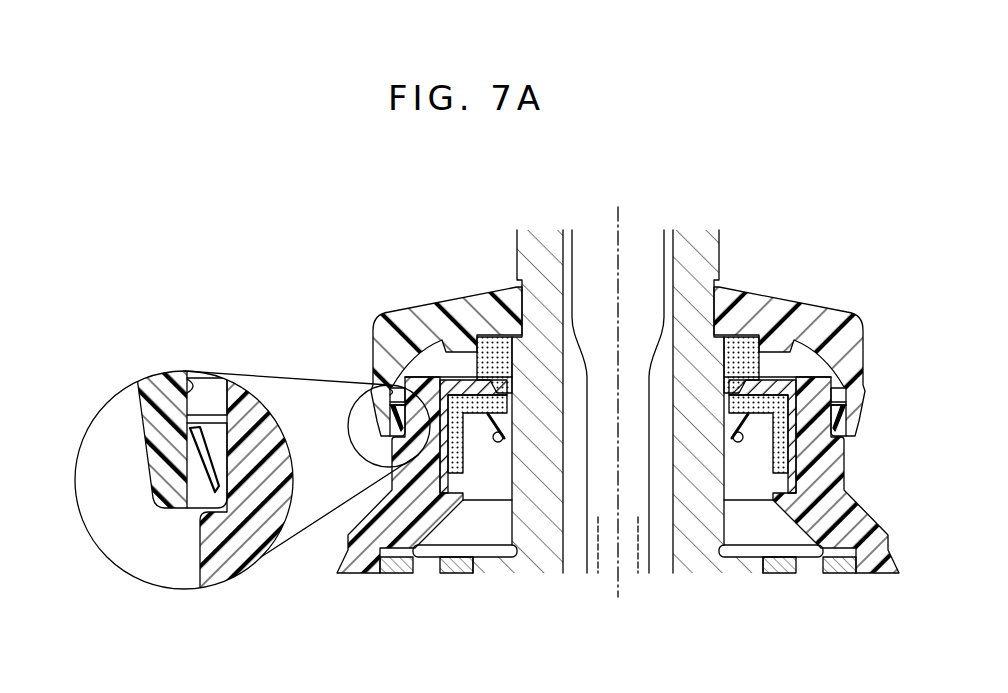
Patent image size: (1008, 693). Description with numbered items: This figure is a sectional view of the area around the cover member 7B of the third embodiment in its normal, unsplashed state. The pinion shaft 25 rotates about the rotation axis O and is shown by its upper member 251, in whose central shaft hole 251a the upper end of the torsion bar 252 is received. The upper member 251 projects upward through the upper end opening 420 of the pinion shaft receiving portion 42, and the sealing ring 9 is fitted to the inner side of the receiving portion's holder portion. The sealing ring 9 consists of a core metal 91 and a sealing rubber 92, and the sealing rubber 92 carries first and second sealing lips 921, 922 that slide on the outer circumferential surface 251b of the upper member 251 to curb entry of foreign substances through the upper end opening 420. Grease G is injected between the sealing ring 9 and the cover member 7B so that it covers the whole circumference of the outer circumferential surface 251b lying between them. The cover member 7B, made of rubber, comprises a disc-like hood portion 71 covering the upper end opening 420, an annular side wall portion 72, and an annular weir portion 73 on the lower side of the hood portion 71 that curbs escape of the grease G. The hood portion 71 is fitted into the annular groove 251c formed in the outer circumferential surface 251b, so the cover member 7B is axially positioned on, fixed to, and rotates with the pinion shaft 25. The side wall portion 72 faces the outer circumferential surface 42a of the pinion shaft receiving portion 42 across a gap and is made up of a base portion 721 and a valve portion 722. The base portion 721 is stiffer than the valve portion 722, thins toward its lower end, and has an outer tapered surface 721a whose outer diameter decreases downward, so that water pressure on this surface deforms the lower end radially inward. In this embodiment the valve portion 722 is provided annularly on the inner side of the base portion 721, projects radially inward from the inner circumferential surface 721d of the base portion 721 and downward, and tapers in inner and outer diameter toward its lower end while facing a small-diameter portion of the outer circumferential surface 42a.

The cover member 7B is at (395, 296).
The hood portion 71 is at (446, 300).
The weir portion 73 is at (787, 347).
The side wall portion 72 is at (216, 470).
The base portion 721 is at (167, 453).
The valve portion 722 is at (160, 506).
The outer tapered surface 721a is at (140, 417).
The inner circumferential surface 721d is at (186, 376).
The pinion shaft receiving portion 42 is at (360, 565).
The outer circumferential surface 42a is at (220, 395).
The upper end opening 420 is at (831, 380).
The pinion shaft 25 is at (728, 237).
The upper member 251 is at (550, 557).
The shaft hole 251a is at (661, 570).
The outer circumferential surface 251b is at (735, 482).
The annular groove 251c is at (517, 303).
The torsion bar 252 is at (636, 250).
The rotation axis O is at (616, 213).
The grease G is at (752, 340).
The sealing ring 9 is at (764, 441).
The core metal 91 is at (793, 470).
The sealing rubber 92 is at (787, 487).
The first sealing lip 921 is at (730, 384).
The second sealing lip 922 is at (730, 433).